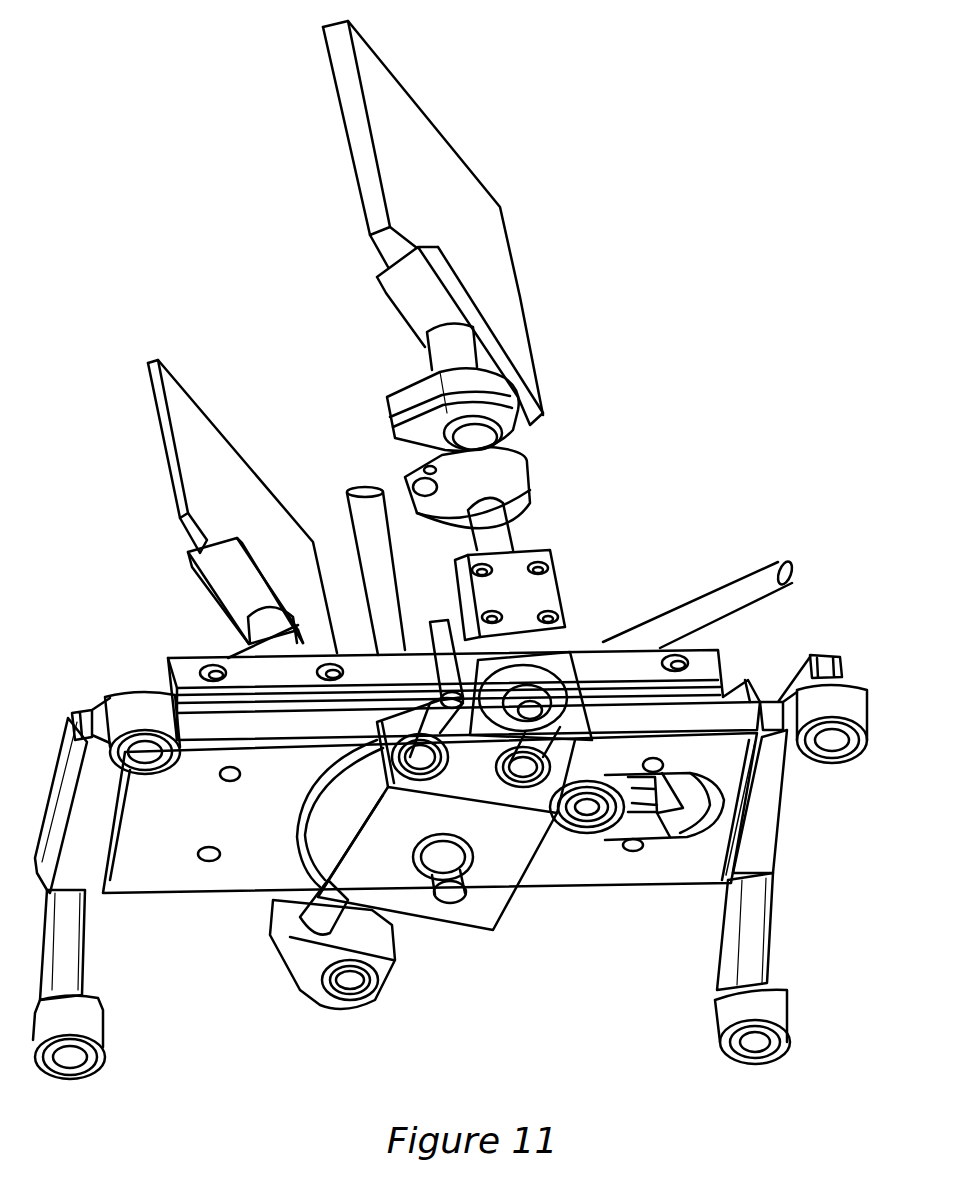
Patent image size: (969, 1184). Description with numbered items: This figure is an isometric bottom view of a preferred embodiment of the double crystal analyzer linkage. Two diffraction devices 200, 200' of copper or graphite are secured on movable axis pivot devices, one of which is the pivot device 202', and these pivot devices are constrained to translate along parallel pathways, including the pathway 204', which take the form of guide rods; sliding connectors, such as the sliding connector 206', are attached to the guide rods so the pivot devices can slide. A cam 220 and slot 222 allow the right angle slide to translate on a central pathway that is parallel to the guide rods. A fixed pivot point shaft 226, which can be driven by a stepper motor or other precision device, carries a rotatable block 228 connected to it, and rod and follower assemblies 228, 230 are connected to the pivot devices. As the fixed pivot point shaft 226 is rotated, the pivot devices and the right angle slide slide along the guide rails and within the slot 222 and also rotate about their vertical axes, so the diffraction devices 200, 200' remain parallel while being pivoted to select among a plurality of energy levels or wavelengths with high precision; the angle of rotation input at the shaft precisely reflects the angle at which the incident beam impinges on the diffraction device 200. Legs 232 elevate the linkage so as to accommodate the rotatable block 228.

The diffraction device 200 is at (241, 484).
The diffraction device 200' is at (454, 223).
The movable axis pivot device 202' is at (443, 436).
The pathway (guide rod) 204' is at (487, 677).
The sliding connector 206' is at (432, 636).
The cam 220 is at (588, 827).
The slot 222 is at (683, 840).
The fixed pivot point shaft 226 is at (358, 487).
The rotatable block 228 is at (487, 915).
The rod and follower assembly 230 is at (600, 637).
The legs 232 is at (773, 927).